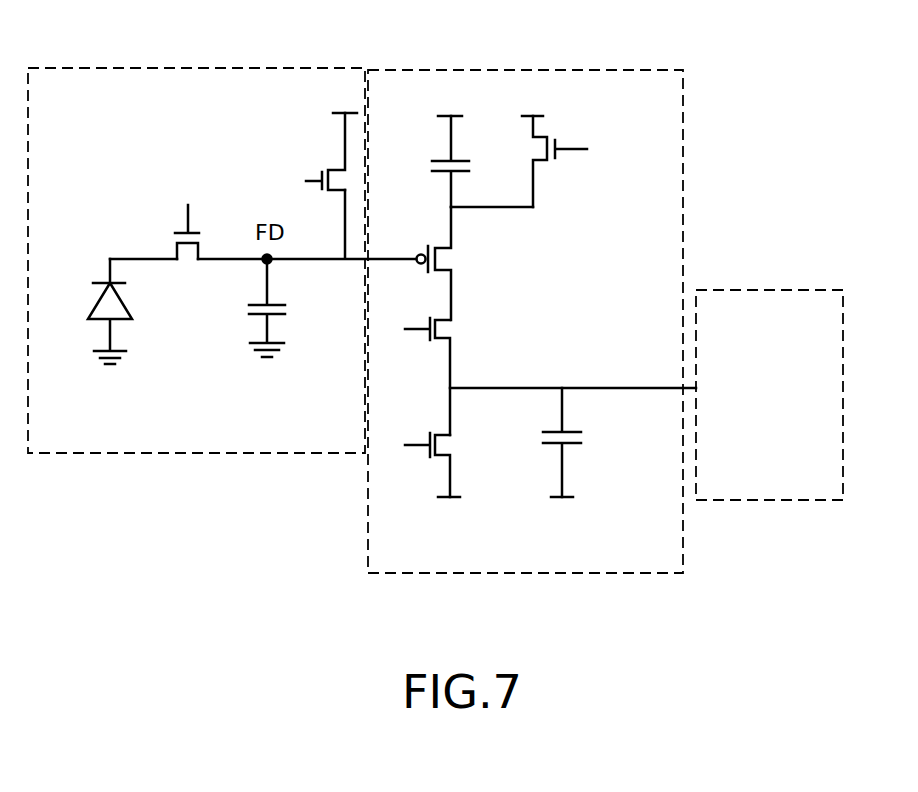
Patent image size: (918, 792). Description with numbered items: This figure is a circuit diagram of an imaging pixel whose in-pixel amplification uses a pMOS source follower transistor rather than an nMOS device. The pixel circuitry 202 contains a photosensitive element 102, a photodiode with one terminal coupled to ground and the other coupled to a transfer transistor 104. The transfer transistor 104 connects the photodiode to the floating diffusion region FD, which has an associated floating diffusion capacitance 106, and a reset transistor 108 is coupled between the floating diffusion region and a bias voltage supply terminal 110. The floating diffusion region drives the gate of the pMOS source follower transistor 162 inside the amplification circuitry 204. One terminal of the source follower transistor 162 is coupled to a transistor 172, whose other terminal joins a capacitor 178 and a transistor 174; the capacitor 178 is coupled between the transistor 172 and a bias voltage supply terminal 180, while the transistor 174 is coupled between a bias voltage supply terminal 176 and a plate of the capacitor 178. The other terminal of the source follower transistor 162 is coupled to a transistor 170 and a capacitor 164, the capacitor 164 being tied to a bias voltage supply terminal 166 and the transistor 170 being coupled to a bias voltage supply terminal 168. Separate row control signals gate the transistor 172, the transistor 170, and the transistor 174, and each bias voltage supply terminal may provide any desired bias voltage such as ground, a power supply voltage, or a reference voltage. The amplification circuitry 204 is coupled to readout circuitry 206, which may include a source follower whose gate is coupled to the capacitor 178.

The photosensitive element 102 is at (90, 327).
The transfer transistor 104 is at (188, 278).
The floating diffusion capacitance 106 is at (288, 312).
The reset transistor 108 is at (332, 160).
The bias voltage supply terminal 110 is at (342, 115).
The pMOS source follower transistor 162 is at (460, 254).
The capacitor 164 is at (466, 150).
The bias voltage supply terminal 166 is at (440, 118).
The bias voltage supply terminal 168 is at (545, 120).
The transistor 170 is at (550, 172).
The transistor 172 is at (460, 327).
The transistor 174 is at (457, 445).
The bias voltage supply terminal 176 is at (461, 496).
The capacitor 178 is at (573, 448).
The bias voltage supply terminal 180 is at (573, 497).
The pixel circuitry 202 is at (223, 68).
The amplification circuitry 204 is at (662, 70).
The readout circuitry 206 is at (773, 290).